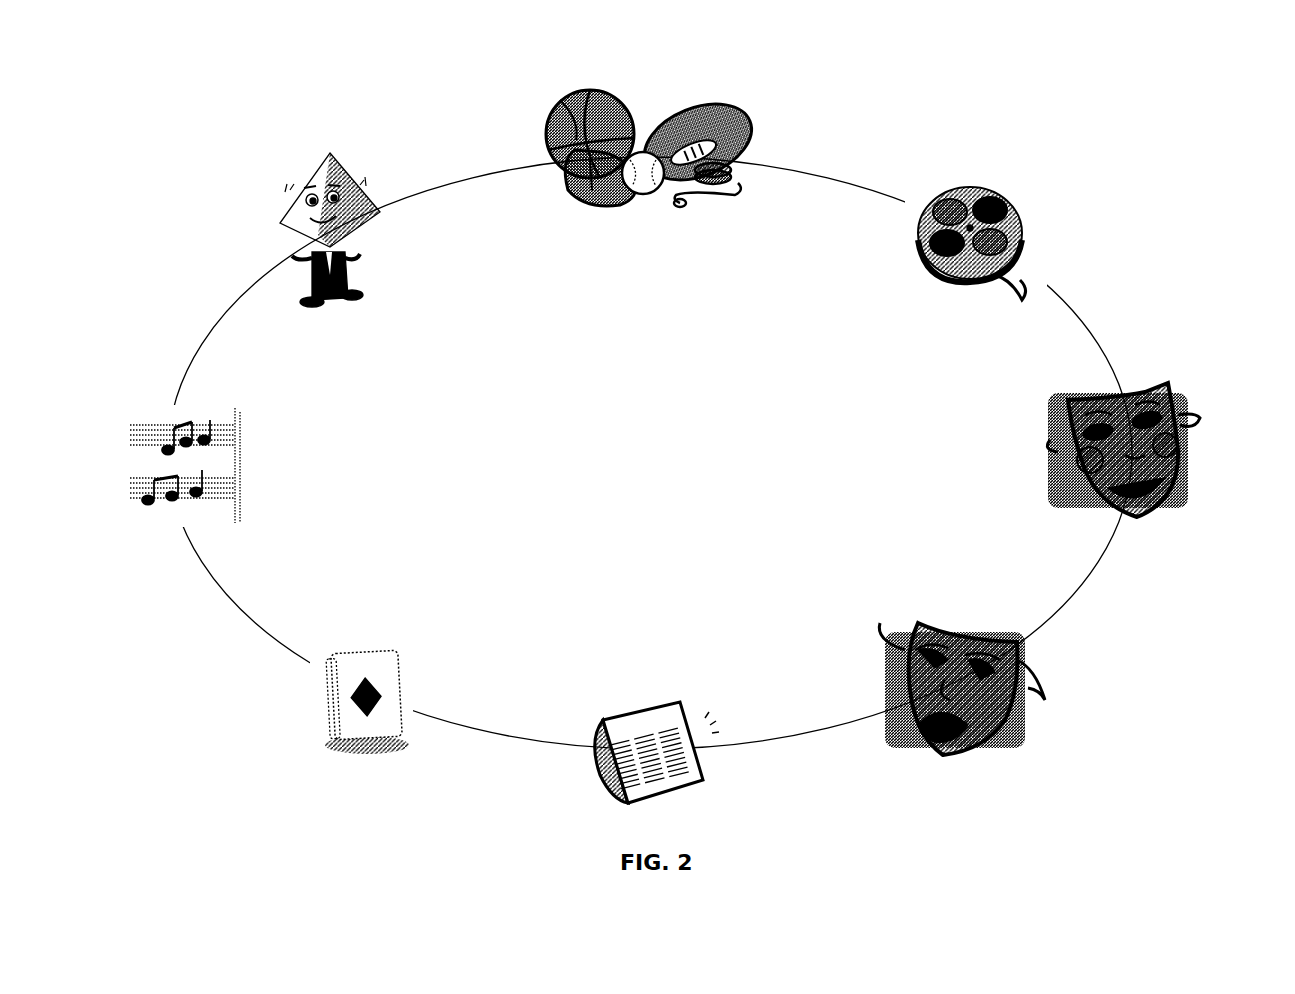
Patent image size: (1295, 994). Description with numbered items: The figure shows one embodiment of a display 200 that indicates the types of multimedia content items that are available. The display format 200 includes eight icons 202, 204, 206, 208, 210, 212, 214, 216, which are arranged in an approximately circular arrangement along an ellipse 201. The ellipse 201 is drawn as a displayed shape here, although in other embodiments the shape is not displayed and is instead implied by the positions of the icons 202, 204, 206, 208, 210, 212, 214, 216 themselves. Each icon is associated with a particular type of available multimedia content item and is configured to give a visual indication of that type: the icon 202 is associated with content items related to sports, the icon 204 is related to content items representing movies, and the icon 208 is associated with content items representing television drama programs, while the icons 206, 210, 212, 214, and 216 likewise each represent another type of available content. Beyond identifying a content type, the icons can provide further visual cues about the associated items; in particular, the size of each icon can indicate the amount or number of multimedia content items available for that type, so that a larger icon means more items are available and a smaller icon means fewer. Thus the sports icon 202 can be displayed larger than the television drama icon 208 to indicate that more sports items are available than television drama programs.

The display 200 is at (250, 26).
The ellipse 201 is at (650, 425).
The icon 202 is at (693, 115).
The icon 204 is at (1016, 200).
The icon 206 is at (1168, 400).
The icon 208 is at (1010, 681).
The icon 210 is at (689, 735).
The icon 212 is at (403, 688).
The icon 214 is at (251, 461).
The icon 216 is at (362, 204).